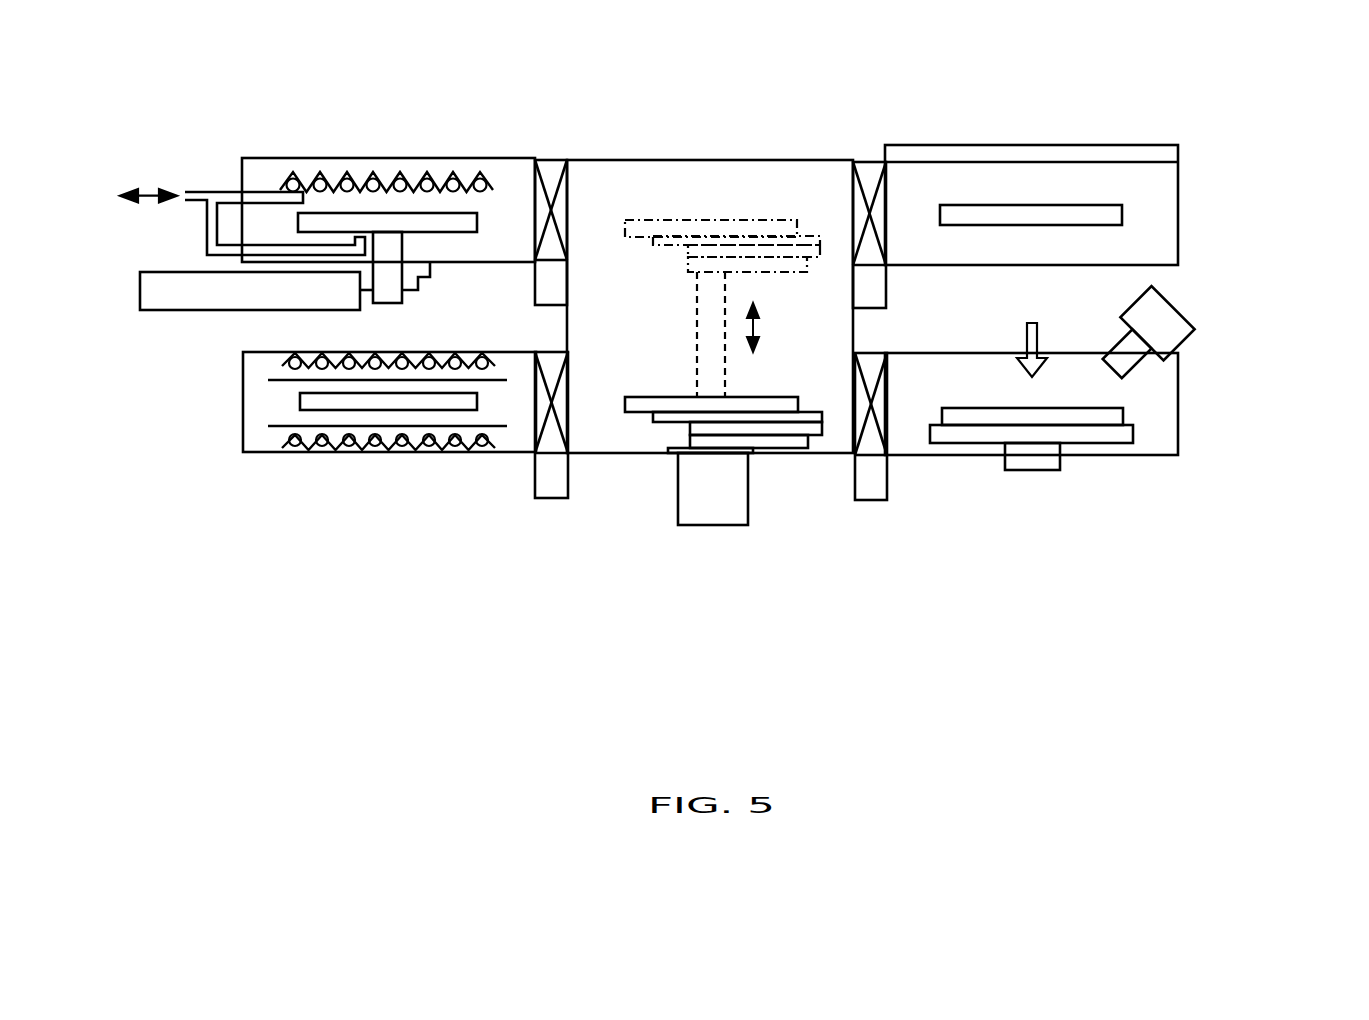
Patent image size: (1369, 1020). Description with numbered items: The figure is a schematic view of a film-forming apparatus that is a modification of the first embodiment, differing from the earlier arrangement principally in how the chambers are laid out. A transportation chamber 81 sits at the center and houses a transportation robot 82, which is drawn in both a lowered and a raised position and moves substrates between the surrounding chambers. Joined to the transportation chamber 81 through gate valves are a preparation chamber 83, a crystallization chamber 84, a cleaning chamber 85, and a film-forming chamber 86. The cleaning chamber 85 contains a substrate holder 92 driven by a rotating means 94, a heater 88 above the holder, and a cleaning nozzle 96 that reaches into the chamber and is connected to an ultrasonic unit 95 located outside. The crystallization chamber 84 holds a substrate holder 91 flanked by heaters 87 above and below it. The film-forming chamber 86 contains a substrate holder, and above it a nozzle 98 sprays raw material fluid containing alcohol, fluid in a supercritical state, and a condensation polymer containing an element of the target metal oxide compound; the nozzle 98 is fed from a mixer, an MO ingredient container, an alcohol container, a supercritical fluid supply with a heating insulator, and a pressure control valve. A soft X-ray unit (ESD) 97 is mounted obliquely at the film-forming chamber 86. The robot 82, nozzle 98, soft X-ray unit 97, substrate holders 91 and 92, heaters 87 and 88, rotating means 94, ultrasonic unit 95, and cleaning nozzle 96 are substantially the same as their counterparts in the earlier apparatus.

The transportation chamber 81 is at (608, 455).
The transportation robot 82 is at (748, 510).
The preparation chamber 83 is at (942, 173).
The crystallization chamber 84 is at (312, 352).
The cleaning chamber 85 is at (383, 158).
The film-forming chamber 86 is at (1113, 452).
The heater 87 is at (347, 363).
The heater 88 is at (437, 170).
The substrate holder 91 is at (477, 402).
The substrate holder 92 is at (477, 222).
The rotating means 94 is at (424, 281).
The ultrasonic unit 95 is at (197, 272).
The cleaning nozzle 96 is at (208, 192).
The soft X-ray unit (ESD) 97 is at (1160, 290).
The nozzle 98 is at (1025, 335).